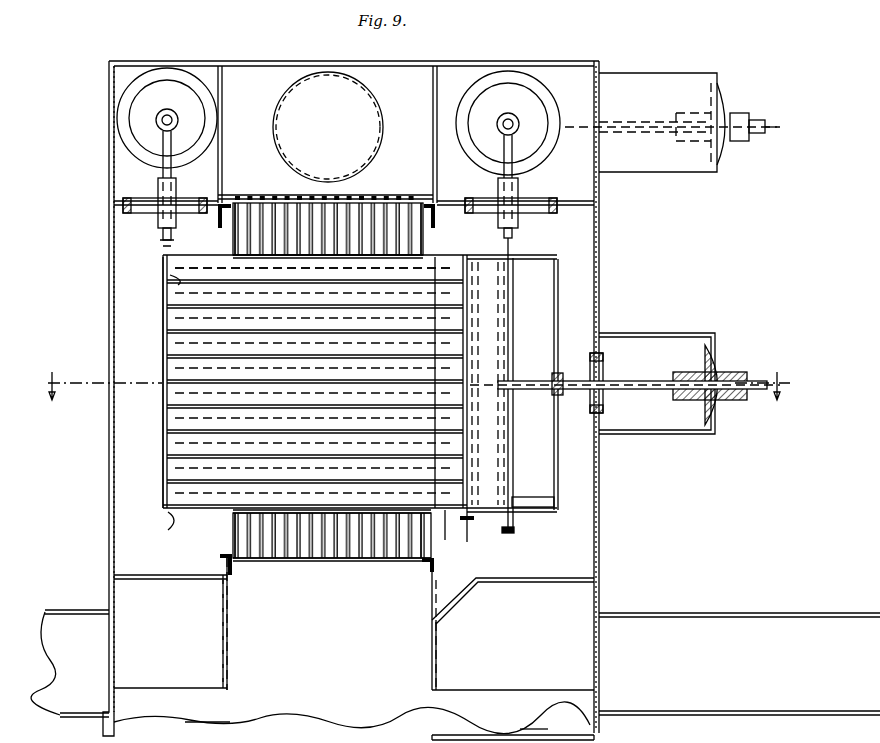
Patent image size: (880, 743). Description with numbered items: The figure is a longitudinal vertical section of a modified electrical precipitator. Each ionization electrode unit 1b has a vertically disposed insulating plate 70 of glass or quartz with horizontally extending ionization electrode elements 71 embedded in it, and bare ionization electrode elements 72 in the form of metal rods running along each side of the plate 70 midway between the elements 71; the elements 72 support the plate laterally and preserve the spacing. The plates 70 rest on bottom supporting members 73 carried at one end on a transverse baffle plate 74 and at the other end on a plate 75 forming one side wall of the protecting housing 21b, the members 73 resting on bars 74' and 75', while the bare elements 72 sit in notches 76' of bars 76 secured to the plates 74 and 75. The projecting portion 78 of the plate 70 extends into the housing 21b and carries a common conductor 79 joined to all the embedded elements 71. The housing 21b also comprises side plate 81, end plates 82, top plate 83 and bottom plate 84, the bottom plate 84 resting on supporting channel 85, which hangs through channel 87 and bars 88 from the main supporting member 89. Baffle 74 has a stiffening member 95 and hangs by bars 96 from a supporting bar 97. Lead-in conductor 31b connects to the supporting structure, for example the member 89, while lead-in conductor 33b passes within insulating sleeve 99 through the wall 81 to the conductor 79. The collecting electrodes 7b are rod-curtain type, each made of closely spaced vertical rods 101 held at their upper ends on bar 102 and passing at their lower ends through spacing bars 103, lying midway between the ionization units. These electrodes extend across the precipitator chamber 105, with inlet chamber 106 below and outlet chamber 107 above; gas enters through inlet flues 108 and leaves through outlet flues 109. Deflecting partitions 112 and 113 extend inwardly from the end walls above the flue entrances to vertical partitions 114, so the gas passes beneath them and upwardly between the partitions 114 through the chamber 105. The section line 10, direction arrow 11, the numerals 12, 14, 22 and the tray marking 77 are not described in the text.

The ionization electrode unit 1b is at (196, 318).
The collecting electrode 7b is at (280, 220).
The section line 10 is at (411, 386).
The air flow direction 11 is at (520, 729).
The floor 12 is at (310, 676).
The air passage 14 is at (458, 528).
The protecting housing 21b is at (594, 266).
The base 22 is at (207, 732).
The lead-in conductor 31b is at (530, 126).
The lead-in conductor 33b is at (511, 392).
The plate 70 is at (355, 268).
The ionization electrode elements 71 is at (388, 272).
The bare ionization electrode elements 72 is at (268, 272).
The bottom supporting members 73 is at (185, 505).
The transverse baffle plate 74 is at (143, 444).
The bar 74' is at (148, 528).
The plate 75 is at (524, 395).
The bar 75' is at (478, 530).
The bars 76 is at (145, 318).
The notches 76' is at (185, 289).
The trays 77 is at (315, 380).
The projecting portion 78 is at (449, 256).
The common conductor 79 is at (504, 345).
The side plate 81 is at (558, 302).
The end plates 82 is at (560, 466).
The top plate 83 is at (545, 259).
The bottom plate 84 is at (535, 512).
The supporting channel 85 is at (511, 534).
The channel 87 is at (513, 236).
The bars 88 is at (516, 150).
The main supporting member 89 is at (512, 112).
The stiffening member 95 is at (162, 243).
The bars 96 is at (172, 177).
The supporting bar 97 is at (180, 118).
The insulating sleeve 99 is at (636, 382).
The rods 101 is at (350, 230).
The bar 102 is at (252, 200).
The spacing bars 103 is at (235, 578).
The precipitator chamber 105 is at (190, 535).
The inlet chamber 106 is at (408, 624).
The outlet chamber 107 is at (265, 85).
The inlet flues 108 is at (536, 735).
The outlet flues 109 is at (350, 80).
The deflecting partition 112 is at (203, 650).
The deflecting partition 113 is at (568, 620).
The vertical partitions 114 is at (232, 616).